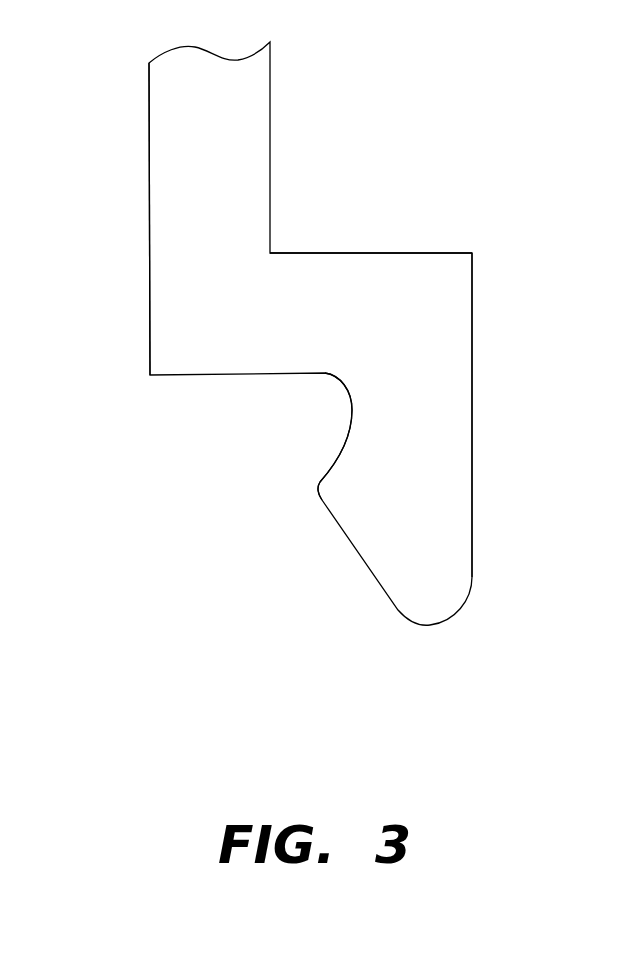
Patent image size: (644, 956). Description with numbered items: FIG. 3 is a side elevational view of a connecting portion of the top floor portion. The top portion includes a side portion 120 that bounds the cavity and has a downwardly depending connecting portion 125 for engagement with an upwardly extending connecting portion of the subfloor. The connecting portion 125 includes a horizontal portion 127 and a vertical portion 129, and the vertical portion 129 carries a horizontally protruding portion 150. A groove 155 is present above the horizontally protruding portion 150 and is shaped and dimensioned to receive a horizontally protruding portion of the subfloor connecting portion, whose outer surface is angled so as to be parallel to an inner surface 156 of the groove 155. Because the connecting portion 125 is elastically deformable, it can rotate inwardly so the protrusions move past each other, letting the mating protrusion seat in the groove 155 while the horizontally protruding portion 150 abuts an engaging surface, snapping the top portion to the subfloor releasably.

The side portion 120 is at (148, 166).
The connecting portion 125 is at (508, 641).
The horizontal portion 127 is at (391, 253).
The vertical portion 129 is at (473, 432).
The horizontally protruding portion 150 is at (304, 493).
The groove 155 is at (345, 388).
The inner surface 156 is at (335, 380).